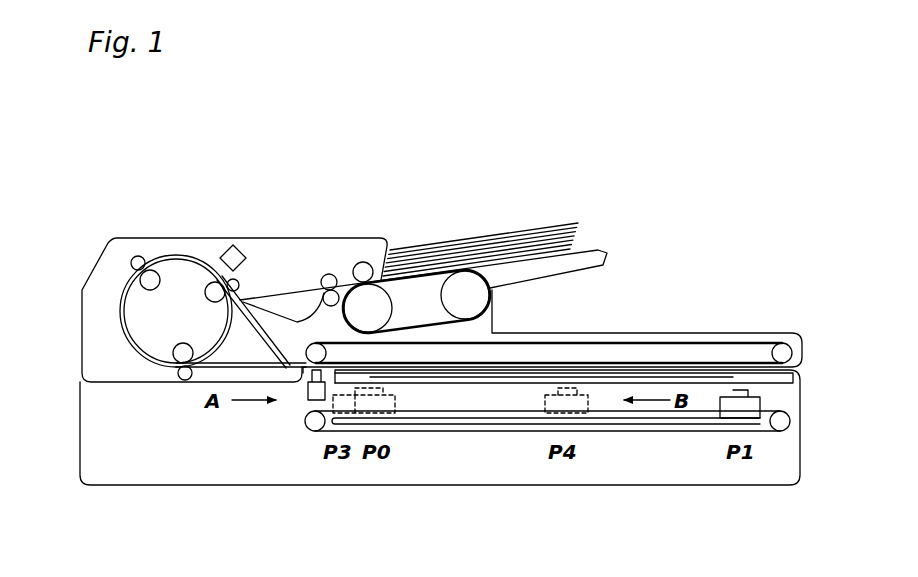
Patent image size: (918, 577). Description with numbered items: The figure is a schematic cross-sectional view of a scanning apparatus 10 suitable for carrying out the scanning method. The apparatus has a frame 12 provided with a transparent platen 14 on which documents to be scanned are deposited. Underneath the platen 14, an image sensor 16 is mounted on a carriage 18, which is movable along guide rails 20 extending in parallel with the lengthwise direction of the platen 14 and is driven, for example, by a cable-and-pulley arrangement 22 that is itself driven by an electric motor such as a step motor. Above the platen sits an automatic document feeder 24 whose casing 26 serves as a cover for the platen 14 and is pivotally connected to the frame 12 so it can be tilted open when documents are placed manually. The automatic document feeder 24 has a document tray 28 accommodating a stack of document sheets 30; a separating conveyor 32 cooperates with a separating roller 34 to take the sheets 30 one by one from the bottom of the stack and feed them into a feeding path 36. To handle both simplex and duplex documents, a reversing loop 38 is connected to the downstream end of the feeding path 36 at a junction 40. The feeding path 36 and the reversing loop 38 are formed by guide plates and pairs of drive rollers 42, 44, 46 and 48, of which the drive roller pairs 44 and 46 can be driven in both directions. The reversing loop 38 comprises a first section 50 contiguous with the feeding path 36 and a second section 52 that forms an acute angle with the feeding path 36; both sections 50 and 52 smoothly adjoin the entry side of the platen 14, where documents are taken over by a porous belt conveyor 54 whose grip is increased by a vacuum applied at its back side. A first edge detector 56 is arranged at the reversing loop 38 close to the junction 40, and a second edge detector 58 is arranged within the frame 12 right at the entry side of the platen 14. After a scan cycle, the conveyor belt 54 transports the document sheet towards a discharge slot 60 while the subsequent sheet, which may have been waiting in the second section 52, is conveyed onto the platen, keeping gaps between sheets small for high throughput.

The scanning apparatus 10 is at (650, 134).
The frame 12 is at (227, 486).
The transparent platen 14 is at (705, 365).
The image sensor 16 is at (752, 357).
The carriage 18 is at (720, 408).
The guide rails 20 is at (652, 437).
The cable-and-pulley arrangement 22 is at (453, 435).
The automatic document feeder 24 is at (115, 227).
The casing 26 is at (673, 335).
The document tray 28 is at (593, 243).
The stack of document sheets 30 is at (472, 238).
The separating conveyor 32 is at (488, 277).
The separating roller 34 is at (366, 262).
The feeding path 36 is at (293, 290).
The reversing loop 38 is at (136, 356).
The junction 40 is at (252, 270).
The drive roller pair 42 is at (327, 270).
The drive roller pair 44 is at (197, 262).
The drive roller pair 46 is at (130, 261).
The drive roller pair 48 is at (185, 381).
The first section 50 is at (167, 257).
The second section 52 is at (250, 330).
The belt conveyor 54 is at (607, 340).
The first edge detector 56 is at (239, 245).
The second edge detector 58 is at (303, 390).
The discharge slot 60 is at (803, 367).